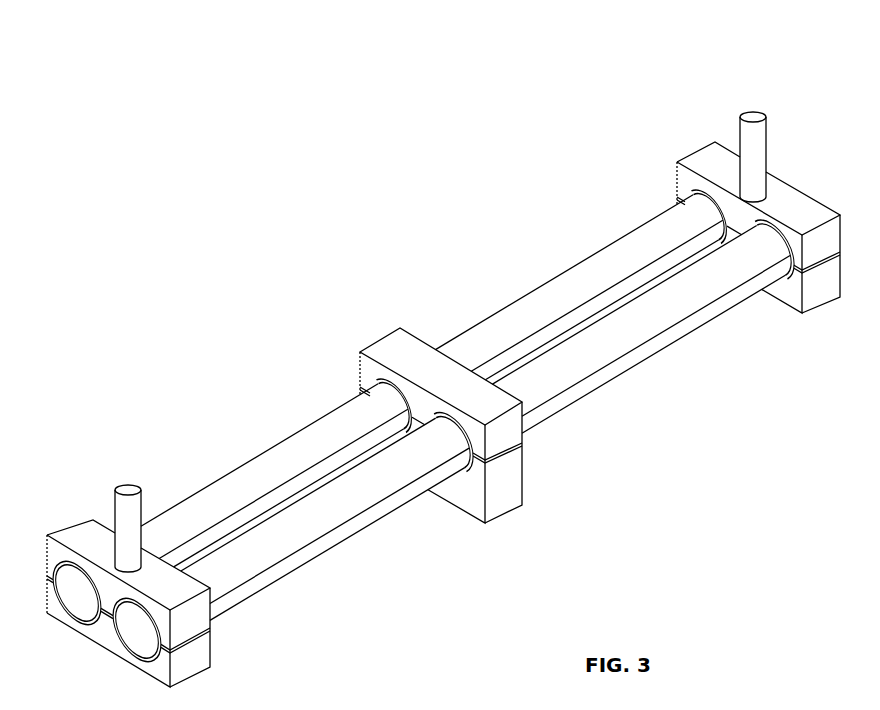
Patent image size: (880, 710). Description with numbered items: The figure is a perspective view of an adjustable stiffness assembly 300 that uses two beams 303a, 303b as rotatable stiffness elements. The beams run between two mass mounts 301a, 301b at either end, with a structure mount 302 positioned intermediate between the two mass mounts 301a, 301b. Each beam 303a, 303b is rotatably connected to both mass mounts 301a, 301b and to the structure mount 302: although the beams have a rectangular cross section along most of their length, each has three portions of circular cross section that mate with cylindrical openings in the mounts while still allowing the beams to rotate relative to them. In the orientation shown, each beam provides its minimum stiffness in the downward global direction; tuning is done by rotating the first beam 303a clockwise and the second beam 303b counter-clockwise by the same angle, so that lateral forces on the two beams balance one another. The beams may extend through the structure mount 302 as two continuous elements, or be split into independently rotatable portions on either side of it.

The adjustable stiffness assembly 300 is at (236, 234).
The mass mount 301a is at (98, 545).
The mass mount 301b is at (706, 163).
The structure mount 302 is at (412, 362).
The first beam 303a is at (212, 503).
The second beam 303b is at (317, 515).